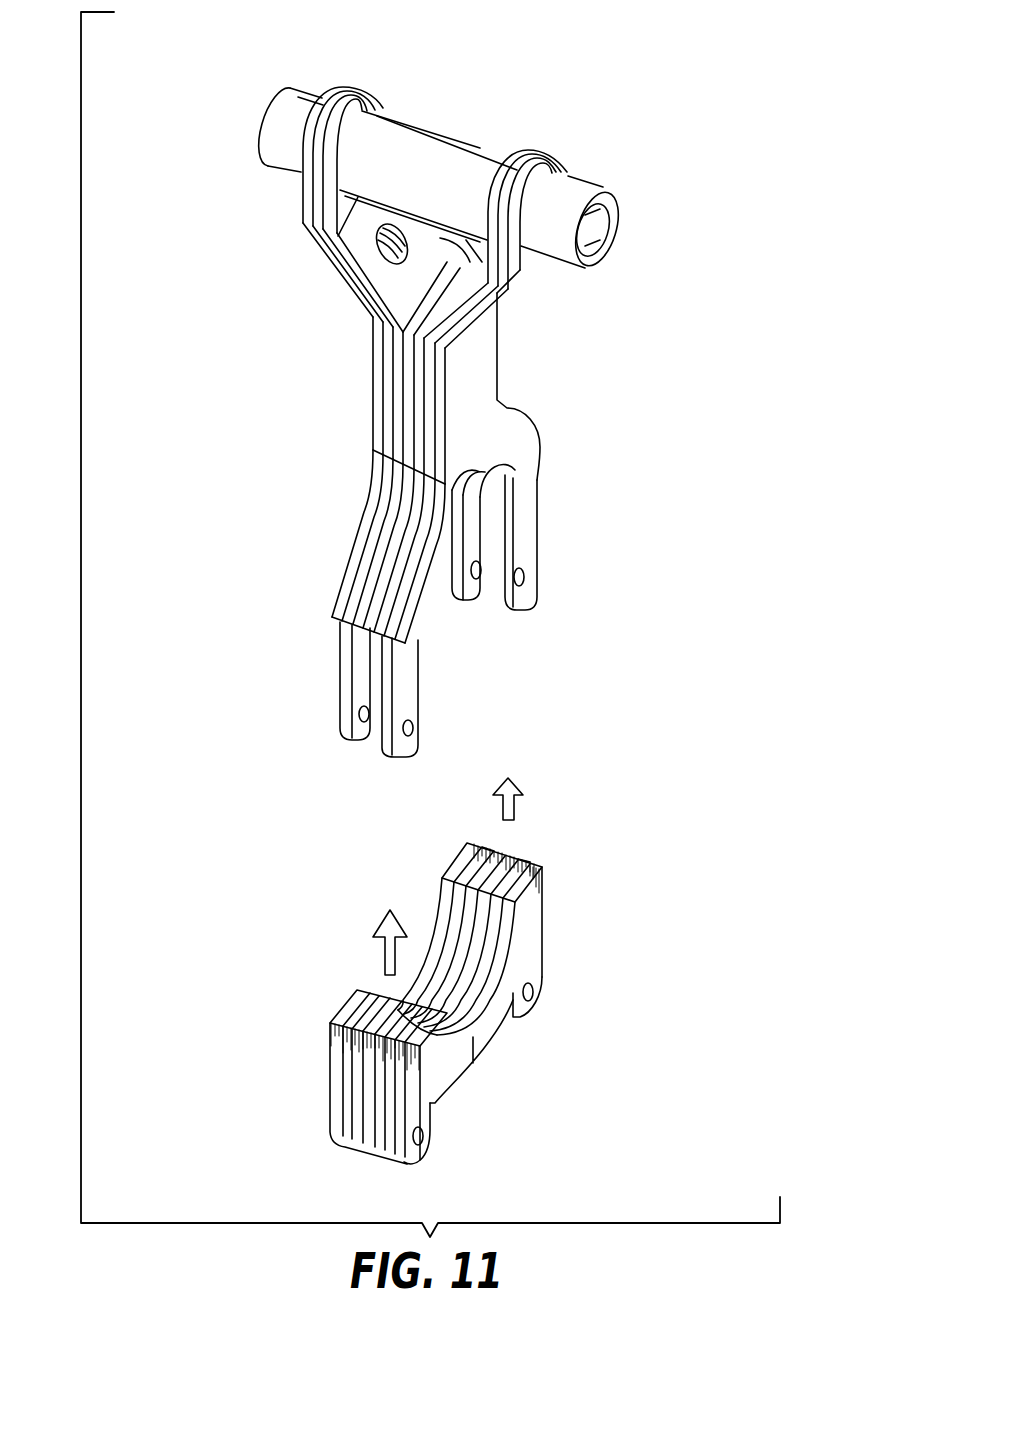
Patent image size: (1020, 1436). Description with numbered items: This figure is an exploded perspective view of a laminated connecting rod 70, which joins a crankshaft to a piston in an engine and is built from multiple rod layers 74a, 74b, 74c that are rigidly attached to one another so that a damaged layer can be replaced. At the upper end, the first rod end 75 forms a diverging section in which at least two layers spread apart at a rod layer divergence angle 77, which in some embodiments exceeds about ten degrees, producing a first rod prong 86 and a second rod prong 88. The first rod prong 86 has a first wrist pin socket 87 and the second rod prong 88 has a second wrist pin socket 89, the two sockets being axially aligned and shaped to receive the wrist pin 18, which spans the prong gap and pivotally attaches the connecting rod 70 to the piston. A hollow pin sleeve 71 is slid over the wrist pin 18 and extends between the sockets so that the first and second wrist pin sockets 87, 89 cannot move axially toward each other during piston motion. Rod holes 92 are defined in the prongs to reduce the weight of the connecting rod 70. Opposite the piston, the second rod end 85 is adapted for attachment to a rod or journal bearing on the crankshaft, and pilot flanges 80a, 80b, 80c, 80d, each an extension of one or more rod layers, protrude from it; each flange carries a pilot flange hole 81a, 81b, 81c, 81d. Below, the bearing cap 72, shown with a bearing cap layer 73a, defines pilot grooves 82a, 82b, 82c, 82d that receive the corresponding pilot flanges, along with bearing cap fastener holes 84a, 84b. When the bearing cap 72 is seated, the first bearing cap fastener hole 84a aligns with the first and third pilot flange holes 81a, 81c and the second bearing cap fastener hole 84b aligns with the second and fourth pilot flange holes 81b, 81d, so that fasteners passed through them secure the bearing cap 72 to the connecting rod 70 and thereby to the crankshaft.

The wrist pin 18 is at (463, 175).
The pin sleeve 71 is at (437, 125).
The first rod end 75 is at (415, 422).
The second wrist pin socket 89 is at (363, 93).
The first wrist pin socket 87 is at (546, 154).
The second rod prong 88 is at (298, 205).
The first rod prong 86 is at (530, 285).
The rod layer divergence angle 77 is at (460, 300).
The rod holes 92 is at (390, 250).
The first rod layer 74a is at (432, 510).
The second rod layer 74b is at (405, 558).
The third rod layer 74c is at (382, 617).
The second rod end 85 is at (338, 714).
The connecting rod 70 is at (541, 496).
The first pilot flange 80a is at (537, 538).
The second pilot flange 80b is at (439, 707).
The third pilot flange 80c is at (470, 594).
The fourth pilot flange 80d is at (326, 714).
The first pilot flange hole 81a is at (519, 577).
The second pilot flange hole 81b is at (412, 726).
The third pilot flange hole 81c is at (480, 574).
The fourth pilot flange hole 81d is at (366, 718).
The bearing cap 72 is at (478, 989).
The bearing cap layer 73a is at (512, 973).
The first pilot groove 82a is at (524, 860).
The second pilot groove 82b is at (404, 1023).
The third pilot groove 82c is at (489, 843).
The fourth pilot groove 82d is at (358, 1009).
The first bearing cap fastener hole 84a is at (535, 1003).
The second bearing cap fastener hole 84b is at (418, 1140).